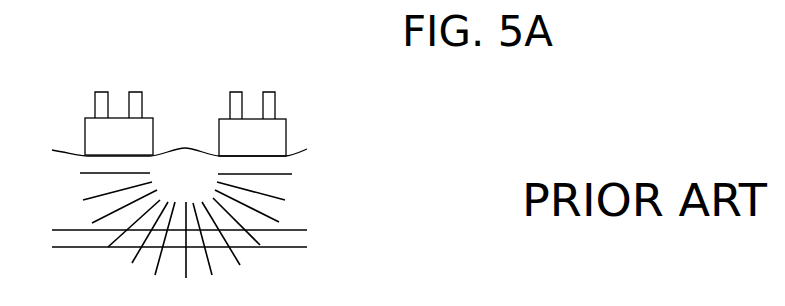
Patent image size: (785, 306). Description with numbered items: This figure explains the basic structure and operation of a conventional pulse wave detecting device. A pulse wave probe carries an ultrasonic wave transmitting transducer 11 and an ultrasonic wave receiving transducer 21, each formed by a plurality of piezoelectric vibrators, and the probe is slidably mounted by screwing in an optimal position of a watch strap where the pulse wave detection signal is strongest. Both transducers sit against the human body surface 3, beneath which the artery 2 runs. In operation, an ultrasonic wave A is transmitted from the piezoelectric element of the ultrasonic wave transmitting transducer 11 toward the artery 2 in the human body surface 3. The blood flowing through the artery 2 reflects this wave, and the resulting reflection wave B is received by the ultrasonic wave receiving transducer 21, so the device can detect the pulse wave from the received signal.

The ultrasonic wave transmitting transducer 11 is at (90, 117).
The ultrasonic wave receiving transducer 21 is at (223, 118).
The human body surface 3 is at (307, 148).
The artery 2 is at (287, 240).
The ultrasonic wave A is at (95, 173).
The reflection wave B is at (270, 173).